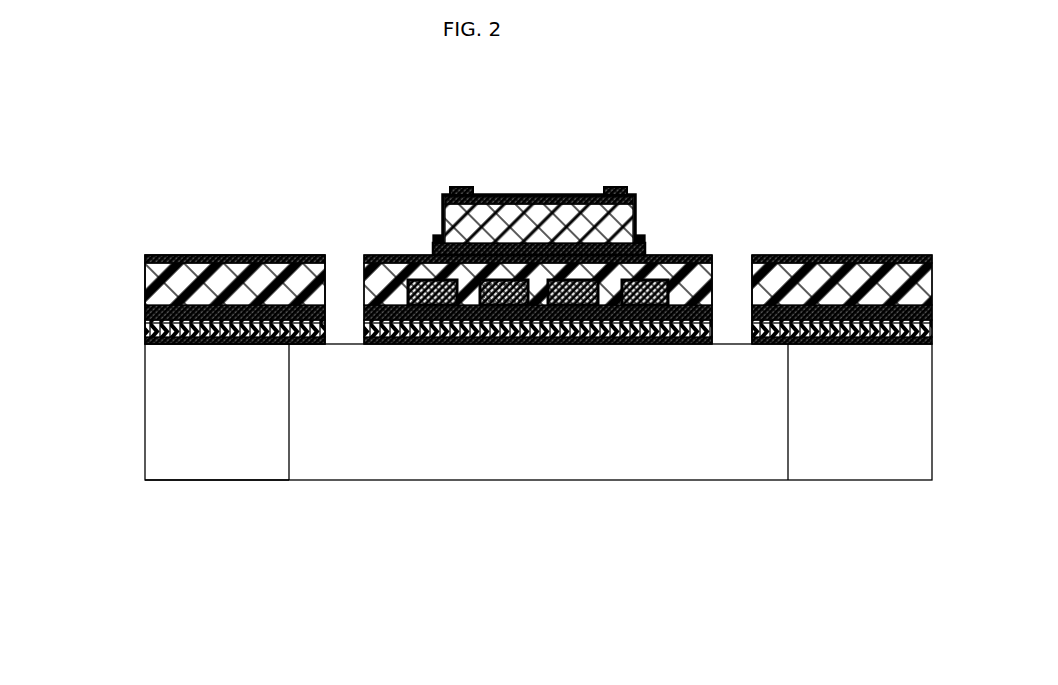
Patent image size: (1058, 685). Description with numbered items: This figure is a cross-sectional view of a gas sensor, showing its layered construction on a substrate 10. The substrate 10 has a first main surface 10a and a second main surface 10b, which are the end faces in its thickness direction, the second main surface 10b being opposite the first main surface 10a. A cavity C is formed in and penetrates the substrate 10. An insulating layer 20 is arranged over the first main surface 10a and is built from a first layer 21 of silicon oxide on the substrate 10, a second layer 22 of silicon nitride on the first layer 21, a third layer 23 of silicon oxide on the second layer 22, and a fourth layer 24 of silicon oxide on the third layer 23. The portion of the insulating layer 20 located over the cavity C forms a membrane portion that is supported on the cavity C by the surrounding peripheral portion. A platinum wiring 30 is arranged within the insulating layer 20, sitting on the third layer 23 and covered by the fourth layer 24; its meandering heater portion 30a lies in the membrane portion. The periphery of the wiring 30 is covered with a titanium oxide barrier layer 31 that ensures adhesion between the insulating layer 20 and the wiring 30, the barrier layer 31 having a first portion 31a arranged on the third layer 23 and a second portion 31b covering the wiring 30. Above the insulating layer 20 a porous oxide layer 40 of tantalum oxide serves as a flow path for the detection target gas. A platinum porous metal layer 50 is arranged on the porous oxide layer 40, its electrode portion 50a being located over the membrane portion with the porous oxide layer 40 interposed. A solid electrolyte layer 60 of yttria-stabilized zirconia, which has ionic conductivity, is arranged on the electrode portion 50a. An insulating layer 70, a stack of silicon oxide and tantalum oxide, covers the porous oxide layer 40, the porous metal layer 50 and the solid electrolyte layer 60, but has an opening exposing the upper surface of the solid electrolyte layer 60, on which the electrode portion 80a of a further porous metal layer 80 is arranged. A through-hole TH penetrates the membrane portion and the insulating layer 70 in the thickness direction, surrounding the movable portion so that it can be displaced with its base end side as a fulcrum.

The substrate 10 is at (897, 470).
The first main surface 10a is at (828, 345).
The second main surface 10b is at (247, 481).
The cavity C is at (289, 410).
The insulating layer 20 is at (473, 317).
The first layer 21 is at (170, 340).
The second layer 22 is at (152, 327).
The third layer 23 is at (150, 313).
The fourth layer 24 is at (497, 295).
The wiring 30 is at (538, 445).
The heater portion 30a is at (647, 306).
The barrier layer 31 is at (490, 452).
The first portion 31a is at (507, 302).
The second portion 31b is at (478, 302).
The porous oxide layer 40 is at (610, 258).
The porous metal layer 50 is at (539, 156).
The electrode portion 50a is at (573, 240).
The solid electrolyte layer 60 is at (533, 205).
The insulating layer 70 is at (257, 254).
The porous metal layer 80 is at (539, 156).
The electrode portion 80a is at (482, 192).
The through-hole TH is at (725, 256).